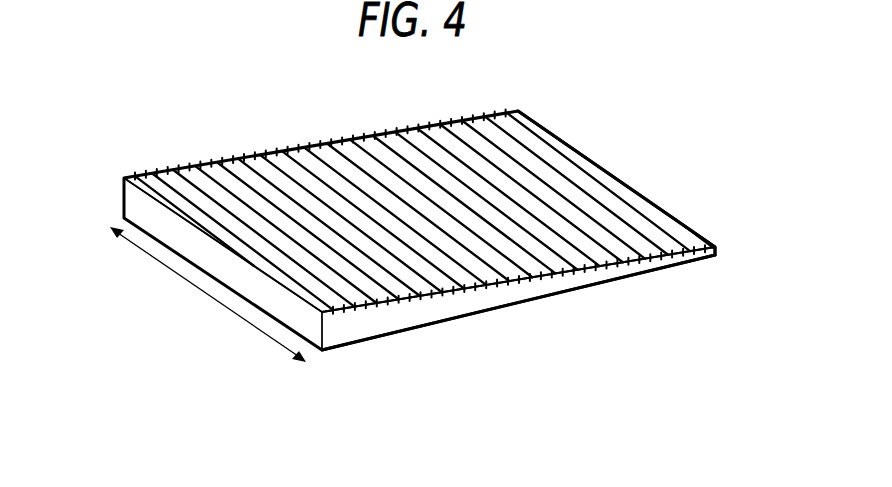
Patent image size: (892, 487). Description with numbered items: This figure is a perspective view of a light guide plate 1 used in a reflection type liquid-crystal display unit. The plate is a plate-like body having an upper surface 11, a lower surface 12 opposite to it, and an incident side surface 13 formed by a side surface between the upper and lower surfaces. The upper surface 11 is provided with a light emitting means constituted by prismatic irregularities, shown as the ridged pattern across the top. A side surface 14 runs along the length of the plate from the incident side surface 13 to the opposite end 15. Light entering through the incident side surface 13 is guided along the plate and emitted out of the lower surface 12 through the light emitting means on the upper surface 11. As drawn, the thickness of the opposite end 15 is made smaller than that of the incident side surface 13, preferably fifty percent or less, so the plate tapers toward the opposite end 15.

The light guide plate 1 is at (686, 190).
The upper surface 11 is at (253, 204).
The lower surface 12 is at (412, 329).
The incident side surface 13 is at (210, 257).
The side surface 14 is at (526, 287).
The opposite end 15 is at (718, 247).